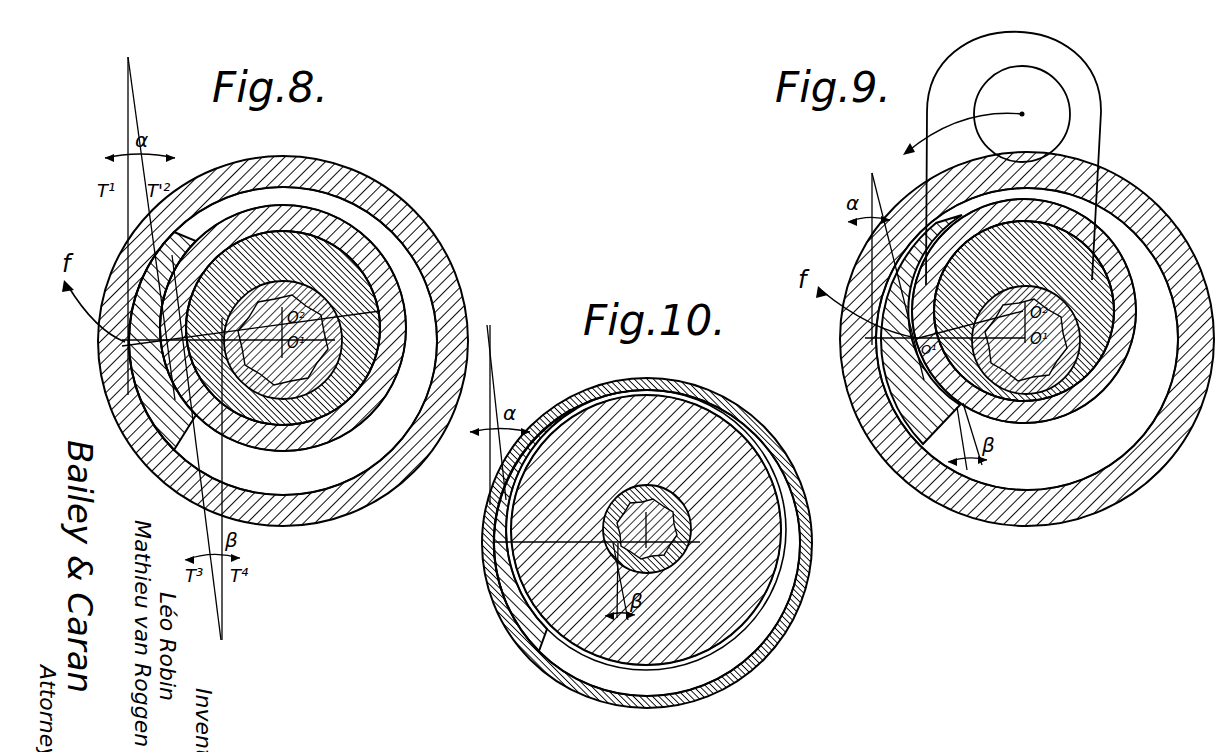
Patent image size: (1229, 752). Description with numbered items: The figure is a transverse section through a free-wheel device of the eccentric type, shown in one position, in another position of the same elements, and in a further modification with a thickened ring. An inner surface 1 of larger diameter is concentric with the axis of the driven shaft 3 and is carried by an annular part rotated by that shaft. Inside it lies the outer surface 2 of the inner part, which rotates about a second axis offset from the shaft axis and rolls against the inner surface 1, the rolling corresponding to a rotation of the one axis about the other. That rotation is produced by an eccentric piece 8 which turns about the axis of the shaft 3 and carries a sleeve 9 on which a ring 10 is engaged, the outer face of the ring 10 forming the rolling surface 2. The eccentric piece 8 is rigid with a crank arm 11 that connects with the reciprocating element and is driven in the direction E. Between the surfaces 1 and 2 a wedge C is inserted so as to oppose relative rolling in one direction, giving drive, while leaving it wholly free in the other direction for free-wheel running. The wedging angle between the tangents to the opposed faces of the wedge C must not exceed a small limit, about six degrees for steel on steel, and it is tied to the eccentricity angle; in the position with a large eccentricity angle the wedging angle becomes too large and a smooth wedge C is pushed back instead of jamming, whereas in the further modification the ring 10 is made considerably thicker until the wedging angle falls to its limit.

In FIG. 8, the inner surface 1 is at (284, 190).
In FIG. 9, the inner surface 1 is at (1105, 202).
In FIG. 10, the inner surface 1 is at (660, 386).
In FIG. 8, the outer surface 2 is at (322, 212).
In FIG. 9, the outer surface 2 is at (1120, 232).
In FIG. 10, the outer surface 2 is at (757, 441).
In FIG. 8, the driven shaft 3 is at (380, 311).
In FIG. 9, the driven shaft 3 is at (1068, 386).
In FIG. 10, the driven shaft 3 is at (775, 464).
In FIG. 8, the eccentric piece 8 is at (352, 230).
In FIG. 9, the eccentric piece 8 is at (1098, 262).
In FIG. 10, the eccentric piece 8 is at (735, 420).
In FIG. 8, the sleeve 9 is at (360, 250).
In FIG. 9, the sleeve 9 is at (1090, 365).
In FIG. 10, the sleeve 9 is at (600, 540).
In FIG. 8, the ring 10 is at (247, 225).
In FIG. 9, the ring 10 is at (1024, 311).
In FIG. 10, the ring 10 is at (672, 485).
In FIG. 9, the crank arm 11 is at (1094, 113).
In FIG. 8, the wedge C is at (130, 377).
In FIG. 9, the wedge C is at (876, 377).
In FIG. 10, the wedge C is at (503, 586).
In FIG. 9, the driving direction E is at (962, 132).